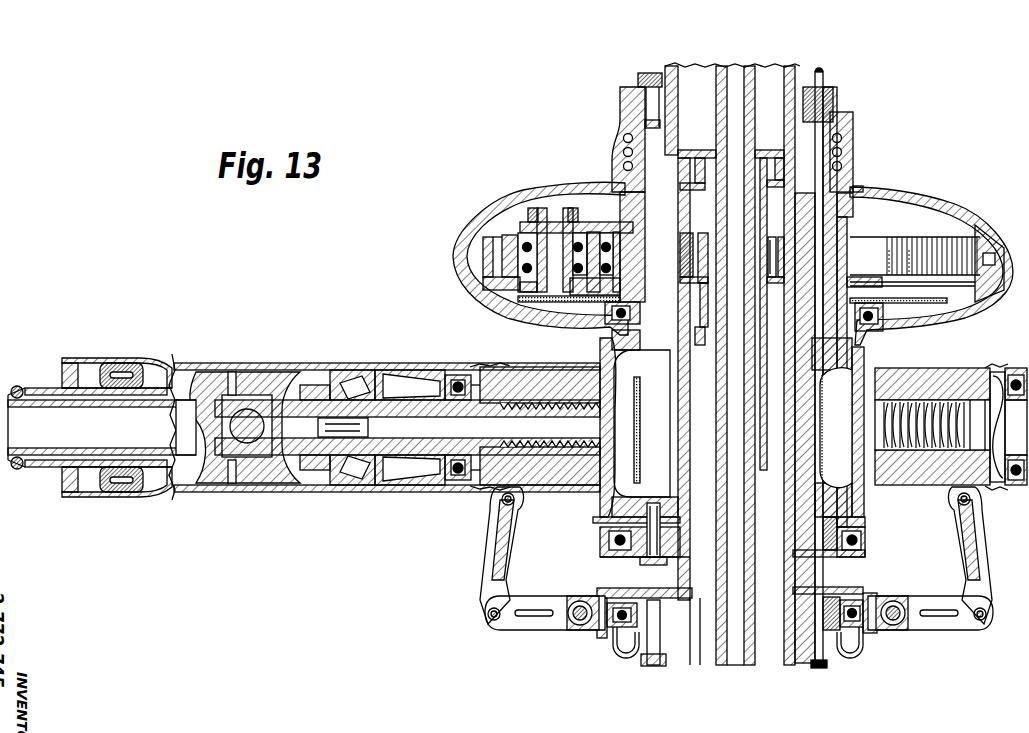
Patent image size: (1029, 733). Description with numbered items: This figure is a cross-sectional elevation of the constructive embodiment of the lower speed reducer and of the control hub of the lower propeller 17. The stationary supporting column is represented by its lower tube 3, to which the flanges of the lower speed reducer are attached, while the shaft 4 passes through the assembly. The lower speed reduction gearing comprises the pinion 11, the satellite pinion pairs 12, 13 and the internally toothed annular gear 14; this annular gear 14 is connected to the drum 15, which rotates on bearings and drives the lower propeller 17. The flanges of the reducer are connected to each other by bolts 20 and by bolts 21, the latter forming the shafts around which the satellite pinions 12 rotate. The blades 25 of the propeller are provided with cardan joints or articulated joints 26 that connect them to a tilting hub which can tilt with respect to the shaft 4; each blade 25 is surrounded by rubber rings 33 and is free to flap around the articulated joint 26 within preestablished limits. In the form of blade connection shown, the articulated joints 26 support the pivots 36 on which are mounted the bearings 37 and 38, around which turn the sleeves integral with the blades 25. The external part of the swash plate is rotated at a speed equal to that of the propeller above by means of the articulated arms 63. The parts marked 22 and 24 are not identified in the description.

The lower part of the stationary tube 3 is at (794, 655).
The shaft 4 is at (755, 84).
The pinion 11 is at (772, 238).
The satellite pinions 12 is at (616, 67).
The satellite pinions 13 is at (510, 238).
The internally toothed annular gear 14 is at (493, 247).
The drum 15 is at (540, 314).
The lower propeller 17 is at (935, 194).
The bolts 20 is at (847, 206).
The bolts 21 is at (620, 207).
The rod 22 is at (824, 80).
The plate 24 is at (496, 292).
The blades 25 is at (52, 418).
The cardan joints 26 is at (247, 412).
The rubber rings 33 is at (118, 358).
The pivots 36 is at (412, 430).
The bearing 37 is at (357, 372).
The bearing 38 is at (458, 482).
The articulated arms 63 is at (512, 636).